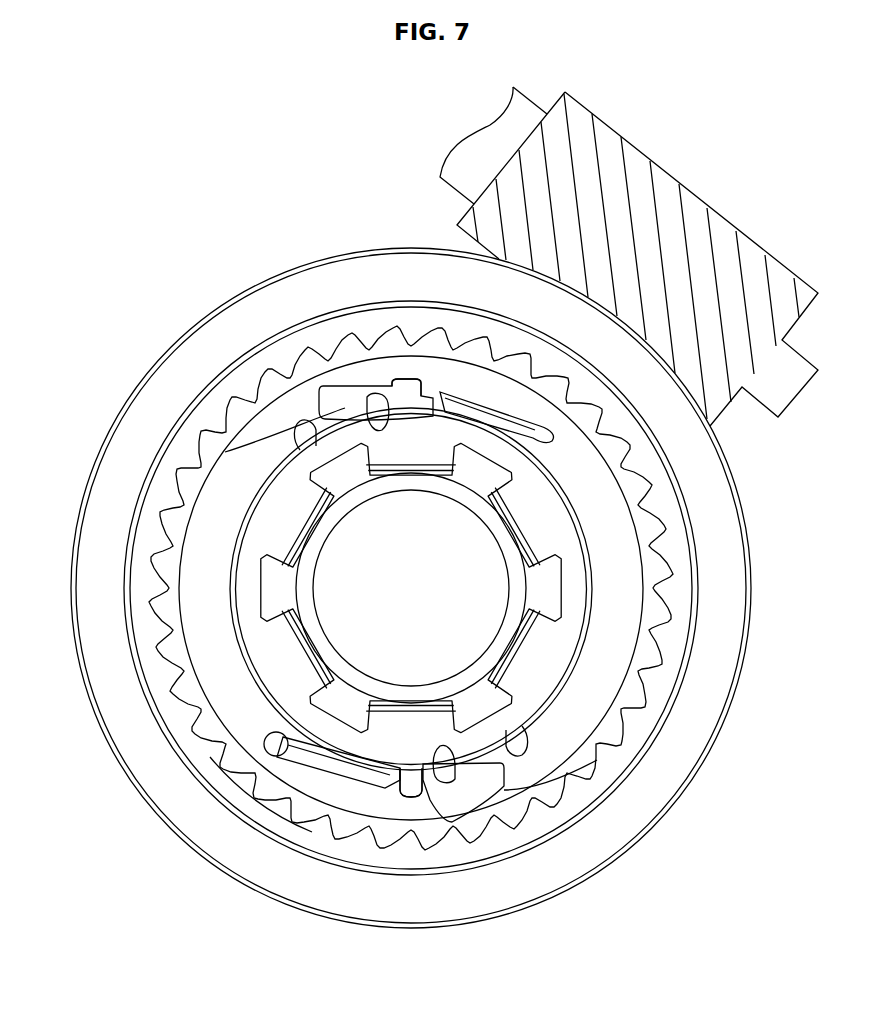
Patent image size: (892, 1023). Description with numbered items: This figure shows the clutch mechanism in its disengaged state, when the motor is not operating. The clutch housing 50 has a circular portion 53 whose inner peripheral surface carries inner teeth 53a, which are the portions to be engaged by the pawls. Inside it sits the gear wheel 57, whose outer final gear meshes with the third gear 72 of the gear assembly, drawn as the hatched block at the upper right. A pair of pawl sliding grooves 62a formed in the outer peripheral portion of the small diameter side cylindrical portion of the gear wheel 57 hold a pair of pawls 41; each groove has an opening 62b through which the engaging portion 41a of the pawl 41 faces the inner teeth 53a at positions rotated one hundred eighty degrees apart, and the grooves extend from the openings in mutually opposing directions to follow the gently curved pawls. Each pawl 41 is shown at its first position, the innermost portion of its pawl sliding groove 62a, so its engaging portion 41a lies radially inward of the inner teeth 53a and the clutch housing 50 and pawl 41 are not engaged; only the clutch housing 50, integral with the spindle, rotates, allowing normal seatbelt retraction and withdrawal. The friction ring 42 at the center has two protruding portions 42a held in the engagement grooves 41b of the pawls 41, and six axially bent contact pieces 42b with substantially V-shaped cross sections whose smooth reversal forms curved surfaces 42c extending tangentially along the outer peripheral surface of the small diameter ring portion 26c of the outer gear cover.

The small diameter ring portion 26c is at (302, 590).
The pawl 41 is at (407, 385).
The engaging portion 41a is at (335, 390).
The engagement groove 41b is at (388, 395).
The friction ring 42 is at (270, 472).
The protruding portion 42a is at (383, 388).
The contact piece 42b is at (290, 520).
The curved surface 42c is at (320, 533).
The clutch housing 50 is at (688, 516).
The circular portion 53 is at (672, 598).
The inner teeth 53a is at (625, 655).
The gear wheel 57 is at (127, 790).
The pawl sliding groove 62a is at (470, 398).
The opening 62b is at (262, 438).
The third gear 72 is at (663, 195).